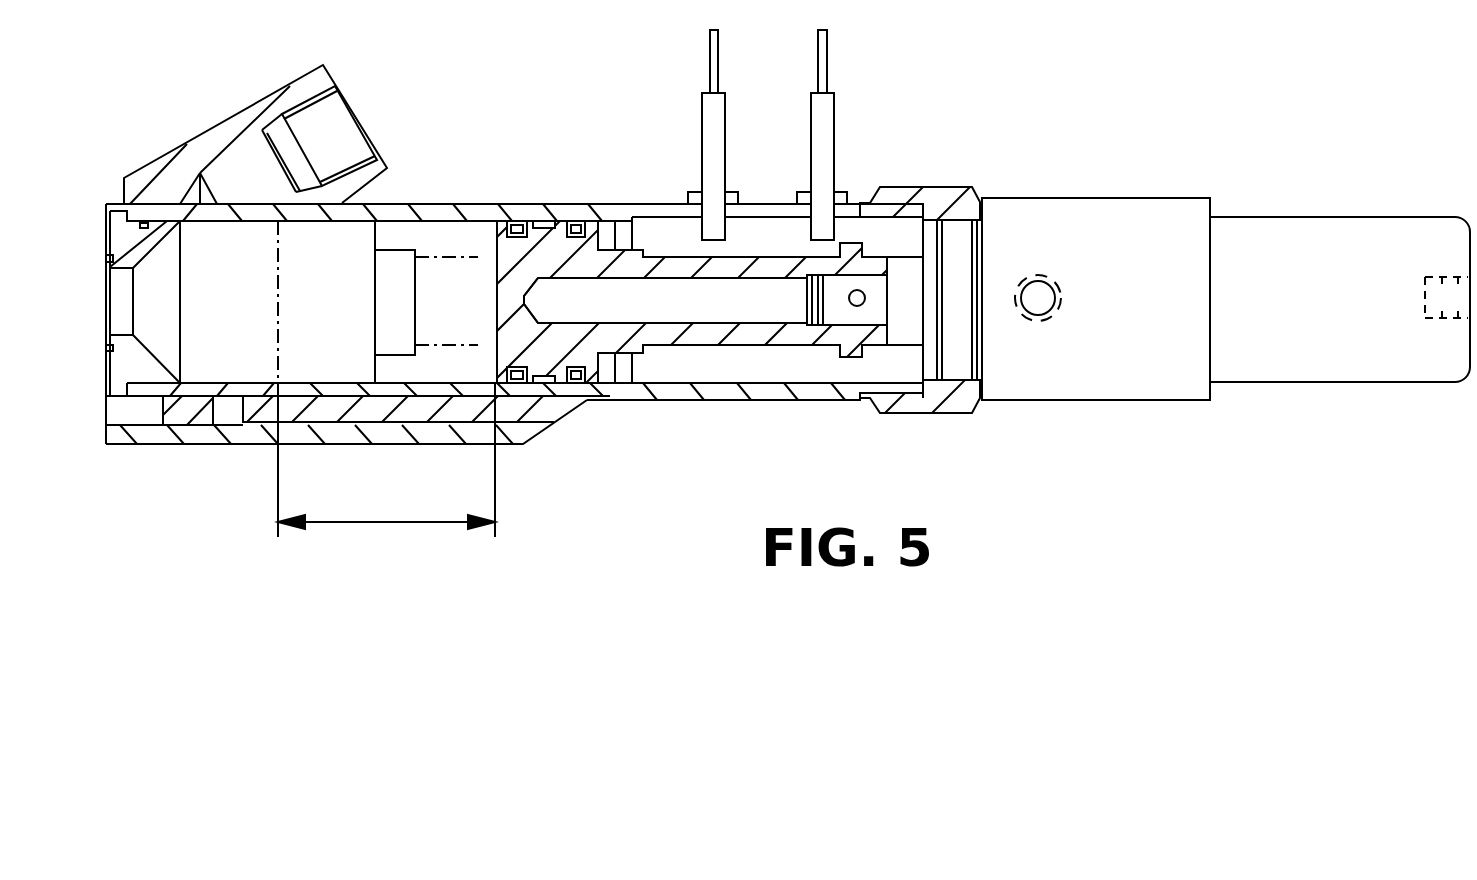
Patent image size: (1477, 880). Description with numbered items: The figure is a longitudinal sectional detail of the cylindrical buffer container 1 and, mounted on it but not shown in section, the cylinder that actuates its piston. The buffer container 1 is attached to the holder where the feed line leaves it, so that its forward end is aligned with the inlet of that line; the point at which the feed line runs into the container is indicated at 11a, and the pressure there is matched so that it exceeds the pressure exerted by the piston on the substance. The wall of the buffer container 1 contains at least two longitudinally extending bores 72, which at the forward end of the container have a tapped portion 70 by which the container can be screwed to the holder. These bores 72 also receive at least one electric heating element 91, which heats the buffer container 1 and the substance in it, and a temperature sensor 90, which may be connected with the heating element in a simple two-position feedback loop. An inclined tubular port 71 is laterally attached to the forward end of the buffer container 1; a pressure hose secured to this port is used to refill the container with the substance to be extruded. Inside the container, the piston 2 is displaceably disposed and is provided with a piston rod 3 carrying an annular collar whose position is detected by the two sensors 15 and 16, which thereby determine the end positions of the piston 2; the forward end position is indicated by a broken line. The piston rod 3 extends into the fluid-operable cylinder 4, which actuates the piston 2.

The buffer container 1 is at (473, 203).
The piston 2 is at (557, 257).
The piston rod 3 is at (717, 332).
The fluid-operable cylinder 4 is at (1085, 360).
The feed line inlet 11a is at (217, 208).
The sensor 15 is at (713, 138).
The sensor 16 is at (827, 123).
The tapped portion 70 is at (143, 413).
The inclined tubular port 71 is at (238, 132).
The longitudinal bores 72 is at (567, 405).
The temperature sensor 90 is at (183, 420).
The electric heating element 91 is at (522, 422).